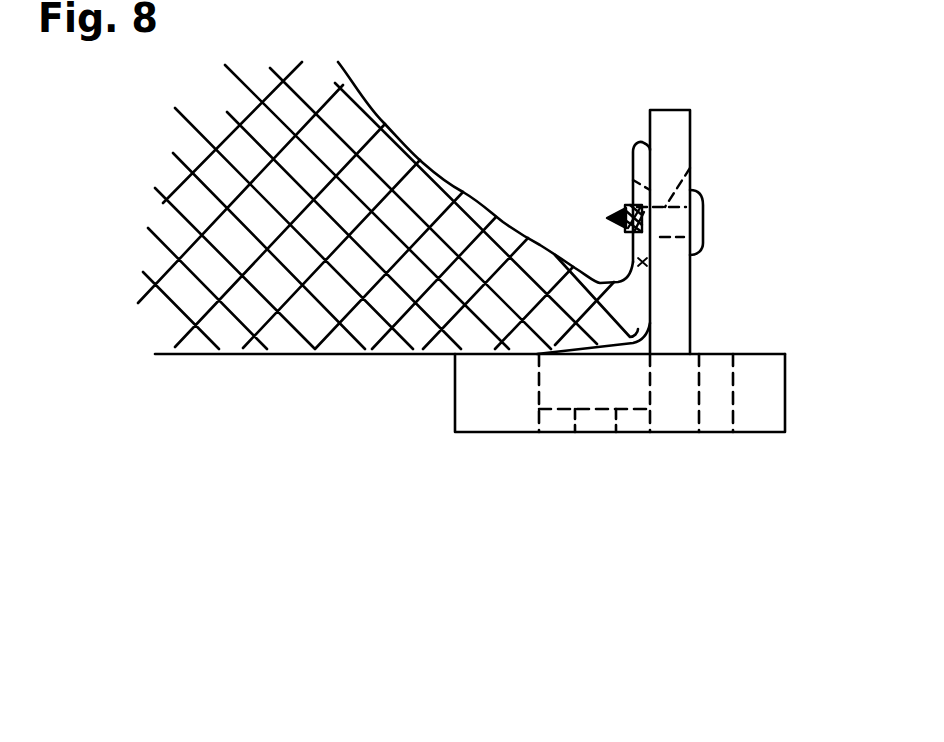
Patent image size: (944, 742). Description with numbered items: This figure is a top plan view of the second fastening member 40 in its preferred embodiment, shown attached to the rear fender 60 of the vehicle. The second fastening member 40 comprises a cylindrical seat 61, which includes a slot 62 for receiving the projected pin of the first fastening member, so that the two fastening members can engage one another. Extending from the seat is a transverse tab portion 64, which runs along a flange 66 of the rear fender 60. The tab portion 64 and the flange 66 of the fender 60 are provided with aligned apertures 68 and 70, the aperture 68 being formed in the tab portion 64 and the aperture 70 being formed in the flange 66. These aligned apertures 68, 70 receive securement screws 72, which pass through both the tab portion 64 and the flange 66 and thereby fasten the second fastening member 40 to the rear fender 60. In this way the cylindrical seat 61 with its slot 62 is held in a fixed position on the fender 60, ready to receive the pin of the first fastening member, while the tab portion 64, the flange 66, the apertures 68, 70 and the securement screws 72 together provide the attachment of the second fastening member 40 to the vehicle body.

The second fastening member 40 is at (785, 392).
The rear fender 60 is at (281, 340).
The cylindrical seat 61 is at (455, 395).
The slot 62 is at (592, 420).
The transverse tab portion 64 is at (675, 293).
The flange 66 is at (636, 166).
The aperture 68 is at (626, 206).
The aperture 70 is at (692, 166).
The securement screws 72 is at (704, 218).